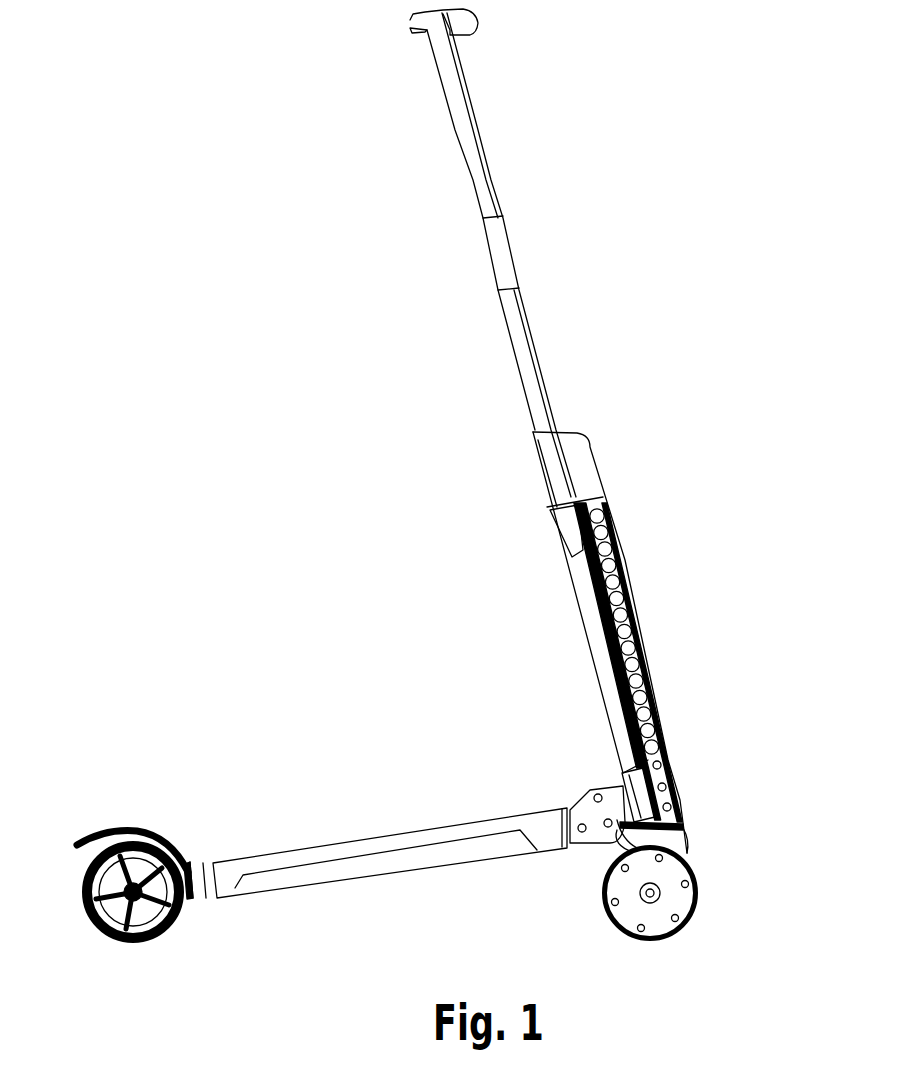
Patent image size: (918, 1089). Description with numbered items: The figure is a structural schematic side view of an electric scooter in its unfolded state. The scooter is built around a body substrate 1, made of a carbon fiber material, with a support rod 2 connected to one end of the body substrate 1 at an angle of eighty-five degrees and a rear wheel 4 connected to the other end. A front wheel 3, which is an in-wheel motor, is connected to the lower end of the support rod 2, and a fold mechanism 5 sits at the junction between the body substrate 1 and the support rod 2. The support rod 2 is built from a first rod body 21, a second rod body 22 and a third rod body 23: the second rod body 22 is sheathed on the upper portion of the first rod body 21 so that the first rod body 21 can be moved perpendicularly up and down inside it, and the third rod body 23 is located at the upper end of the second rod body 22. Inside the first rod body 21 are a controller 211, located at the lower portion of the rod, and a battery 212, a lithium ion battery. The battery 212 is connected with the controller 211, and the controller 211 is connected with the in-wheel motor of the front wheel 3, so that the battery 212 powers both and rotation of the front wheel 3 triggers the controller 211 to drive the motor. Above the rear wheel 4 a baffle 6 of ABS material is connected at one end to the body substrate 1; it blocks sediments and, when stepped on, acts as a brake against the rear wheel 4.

The body substrate 1 is at (387, 835).
The support rod 2 is at (590, 354).
The first rod body 21 is at (595, 463).
The controller 211 is at (645, 772).
The battery 212 is at (630, 578).
The second rod body 22 is at (513, 255).
The third rod body 23 is at (463, 22).
The front wheel 3 is at (700, 885).
The rear wheel 4 is at (163, 837).
The fold mechanism 5 is at (612, 810).
The baffle 6 is at (108, 835).